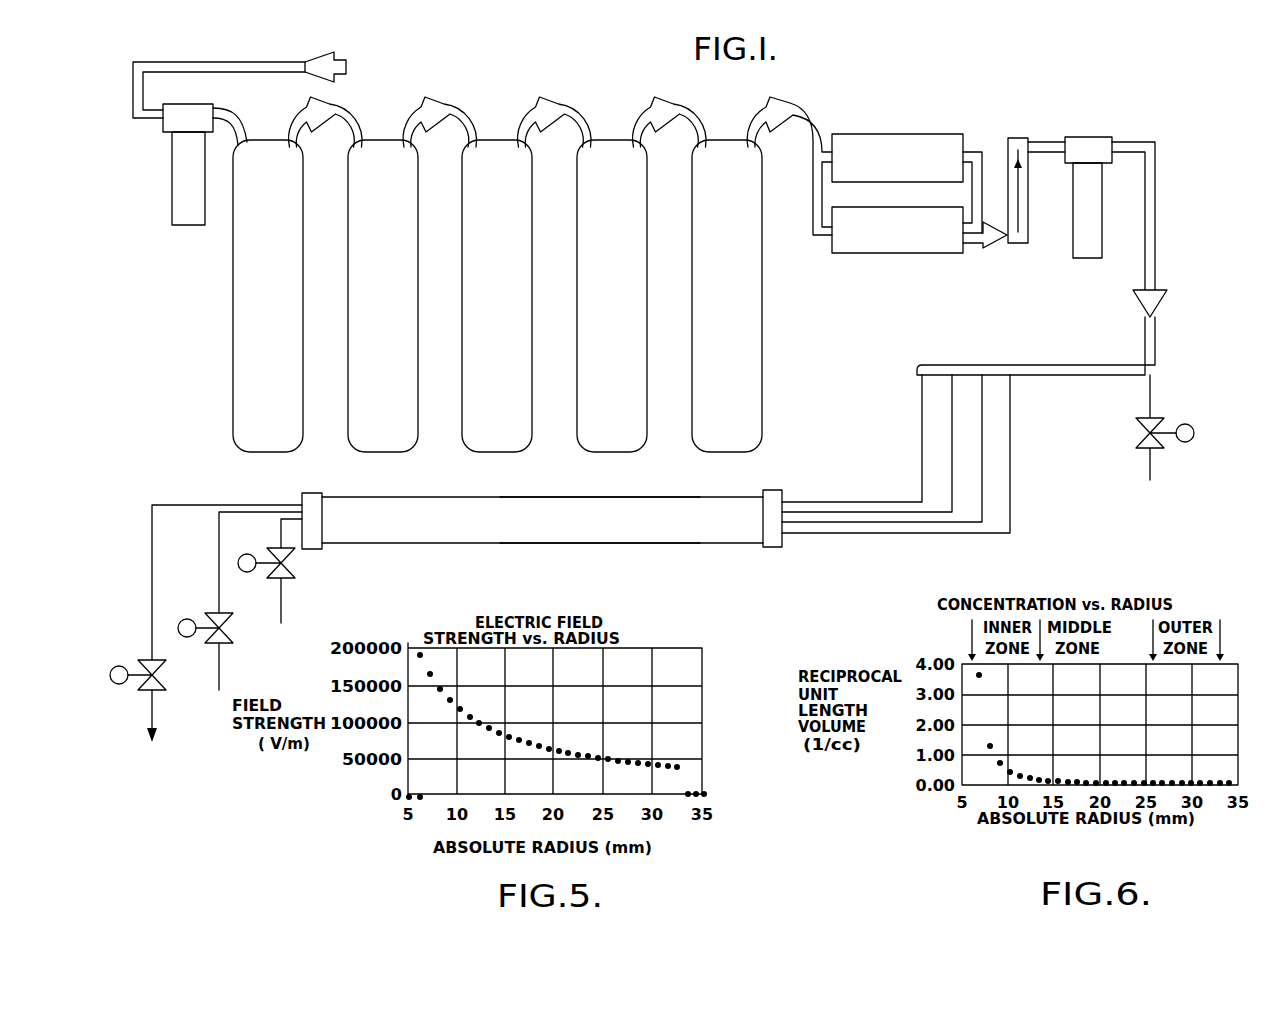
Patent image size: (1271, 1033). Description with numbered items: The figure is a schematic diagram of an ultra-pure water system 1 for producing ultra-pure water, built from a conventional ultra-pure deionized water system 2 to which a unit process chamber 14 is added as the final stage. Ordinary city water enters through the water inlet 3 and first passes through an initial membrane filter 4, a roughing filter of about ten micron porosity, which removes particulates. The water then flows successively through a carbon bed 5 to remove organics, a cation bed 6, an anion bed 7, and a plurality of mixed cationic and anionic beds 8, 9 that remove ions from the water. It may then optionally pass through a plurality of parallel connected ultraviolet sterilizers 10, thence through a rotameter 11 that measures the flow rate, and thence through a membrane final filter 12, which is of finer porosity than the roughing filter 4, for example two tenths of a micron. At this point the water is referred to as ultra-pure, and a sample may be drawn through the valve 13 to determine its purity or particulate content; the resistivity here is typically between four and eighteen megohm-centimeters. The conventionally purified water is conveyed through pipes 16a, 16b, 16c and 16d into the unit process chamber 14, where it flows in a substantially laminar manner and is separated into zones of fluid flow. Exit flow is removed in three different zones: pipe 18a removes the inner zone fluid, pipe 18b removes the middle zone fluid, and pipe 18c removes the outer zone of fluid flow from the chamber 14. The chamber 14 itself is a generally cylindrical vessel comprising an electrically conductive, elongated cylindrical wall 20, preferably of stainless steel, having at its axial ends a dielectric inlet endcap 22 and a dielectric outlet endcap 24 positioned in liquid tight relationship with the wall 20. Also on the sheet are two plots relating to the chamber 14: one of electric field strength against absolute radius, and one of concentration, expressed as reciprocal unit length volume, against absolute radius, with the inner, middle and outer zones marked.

The ultra-pure water system 1 is at (1057, 486).
The ultra-pure deionized water system 2 is at (817, 297).
The water inlet 3 is at (336, 52).
The initial membrane filter 4 is at (172, 192).
The carbon bed 5 is at (233, 324).
The cation bed 6 is at (418, 353).
The anion bed 7 is at (532, 385).
The mixed cationic and anionic bed 8 is at (647, 386).
The mixed cationic and anionic bed 9 is at (762, 386).
The ultraviolet sterilizers 10 is at (880, 134).
The rotameter 11 is at (1022, 246).
The membrane final filter 12 is at (1110, 137).
The valve 13 is at (1160, 420).
The unit process chamber 14 is at (537, 494).
The pipe 16a is at (922, 420).
The pipe 16b is at (951, 447).
The pipe 16c is at (982, 428).
The pipe 16d is at (1010, 449).
The pipe 18a is at (280, 537).
The pipe 18b is at (218, 565).
The pipe 18c is at (152, 596).
The cylindrical wall 20 is at (704, 497).
The inlet endcap 22 is at (778, 490).
The outlet endcap 24 is at (318, 493).